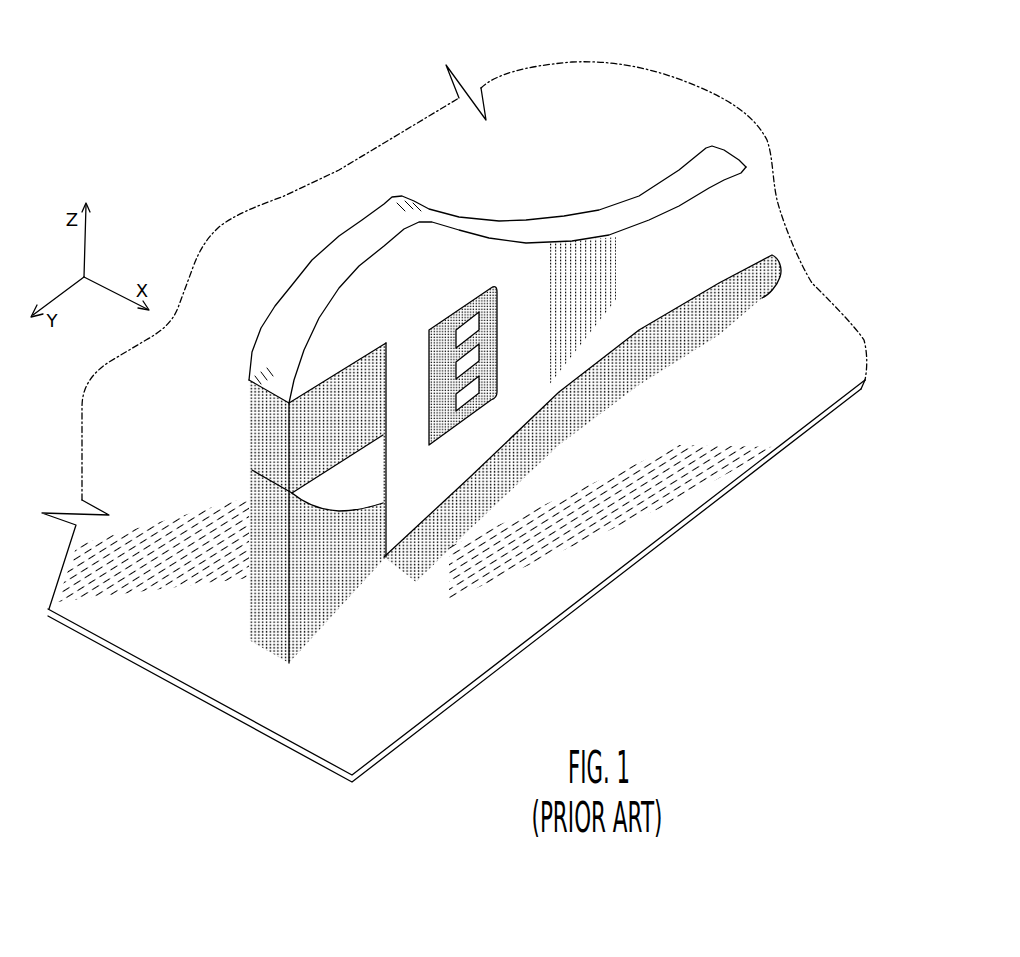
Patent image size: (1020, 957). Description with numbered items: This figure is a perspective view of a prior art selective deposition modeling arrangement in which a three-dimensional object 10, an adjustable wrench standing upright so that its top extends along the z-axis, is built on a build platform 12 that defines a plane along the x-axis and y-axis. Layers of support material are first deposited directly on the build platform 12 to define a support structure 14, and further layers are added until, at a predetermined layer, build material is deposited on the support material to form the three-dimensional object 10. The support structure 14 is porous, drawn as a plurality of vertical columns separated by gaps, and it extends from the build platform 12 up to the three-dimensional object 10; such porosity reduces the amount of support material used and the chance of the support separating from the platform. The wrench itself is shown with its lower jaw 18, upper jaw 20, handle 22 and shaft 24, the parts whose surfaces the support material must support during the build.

The three-dimensional object 10 is at (723, 207).
The build platform 12 is at (800, 403).
The support structure 14 is at (377, 345).
The fin 18 is at (313, 497).
The gate 20 is at (348, 295).
The fin sidewall 22 is at (723, 250).
The contact region 24 is at (488, 287).